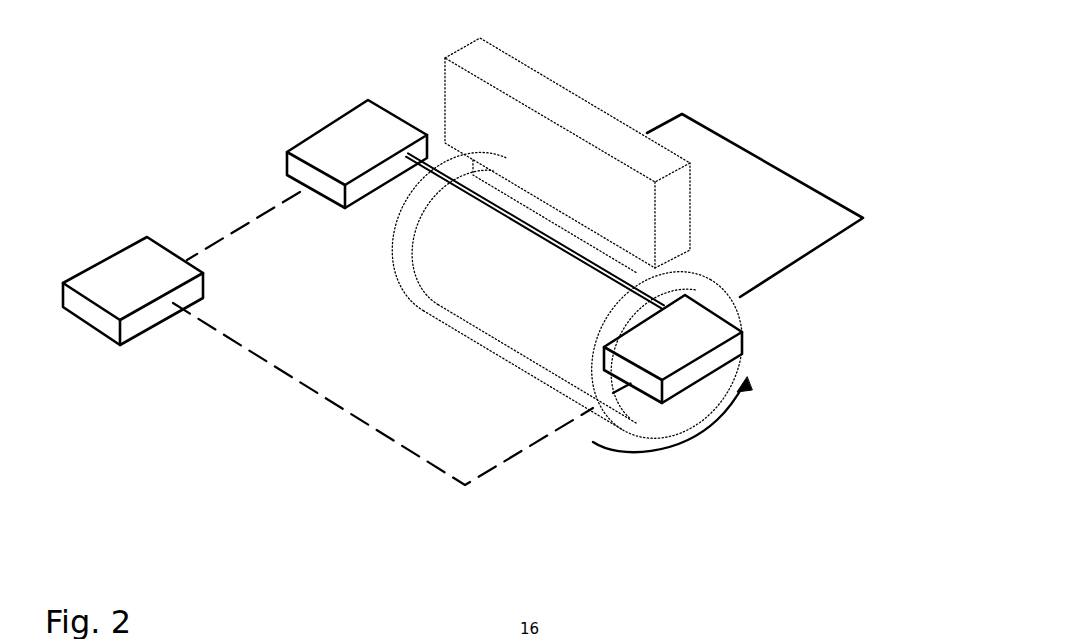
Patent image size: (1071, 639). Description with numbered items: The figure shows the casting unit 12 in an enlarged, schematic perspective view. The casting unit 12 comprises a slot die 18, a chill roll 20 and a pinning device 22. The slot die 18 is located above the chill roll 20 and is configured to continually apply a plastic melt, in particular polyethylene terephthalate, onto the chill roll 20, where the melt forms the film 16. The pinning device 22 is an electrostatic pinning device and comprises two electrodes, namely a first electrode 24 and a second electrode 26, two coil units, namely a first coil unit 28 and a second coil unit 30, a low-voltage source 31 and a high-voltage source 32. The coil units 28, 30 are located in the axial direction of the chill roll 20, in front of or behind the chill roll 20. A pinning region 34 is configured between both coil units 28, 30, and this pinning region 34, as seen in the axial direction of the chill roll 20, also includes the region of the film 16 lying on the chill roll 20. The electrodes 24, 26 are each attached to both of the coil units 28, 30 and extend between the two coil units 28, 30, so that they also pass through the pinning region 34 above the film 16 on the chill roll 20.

The casting unit 12 is at (211, 38).
The film 16 is at (785, 210).
The slot die 18 is at (677, 248).
The chill roll 20 is at (732, 310).
The pinning device 22 is at (256, 85).
The first electrode 24 is at (470, 192).
The second electrode 26 is at (488, 203).
The first coil unit 28 is at (735, 352).
The second coil unit 30 is at (310, 152).
The low-voltage source 31 is at (126, 332).
The high-voltage source 32 is at (105, 297).
The pinning region 34 is at (520, 211).